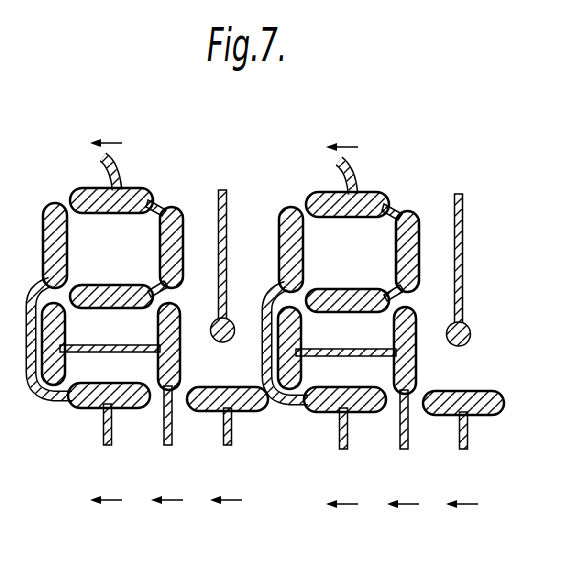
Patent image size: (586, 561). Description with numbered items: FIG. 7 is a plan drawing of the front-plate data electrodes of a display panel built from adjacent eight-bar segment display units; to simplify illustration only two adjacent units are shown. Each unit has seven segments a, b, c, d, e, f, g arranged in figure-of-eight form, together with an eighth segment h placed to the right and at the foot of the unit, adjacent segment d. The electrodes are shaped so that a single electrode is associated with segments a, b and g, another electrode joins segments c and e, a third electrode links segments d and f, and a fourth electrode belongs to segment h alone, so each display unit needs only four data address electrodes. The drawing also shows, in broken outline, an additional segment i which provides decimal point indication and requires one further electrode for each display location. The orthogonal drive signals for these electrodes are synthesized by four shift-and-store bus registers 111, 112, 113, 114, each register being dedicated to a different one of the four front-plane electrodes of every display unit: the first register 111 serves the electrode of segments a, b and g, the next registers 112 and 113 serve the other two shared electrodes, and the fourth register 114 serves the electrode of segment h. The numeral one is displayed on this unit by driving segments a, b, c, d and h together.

The display segment a is at (87, 188).
The display segment b is at (172, 240).
The display segment c is at (166, 334).
The display segment d is at (100, 392).
The display segment e is at (60, 322).
The display segment f is at (56, 236).
The display segment g is at (110, 291).
The display segment h is at (220, 394).
The decimal point segment i is at (228, 337).
The first shift-and-store bus register 111 is at (228, 140).
The second shift-and-store bus register 112 is at (224, 456).
The third shift-and-store bus register 113 is at (285, 447).
The fourth shift-and-store bus register 114 is at (344, 458).